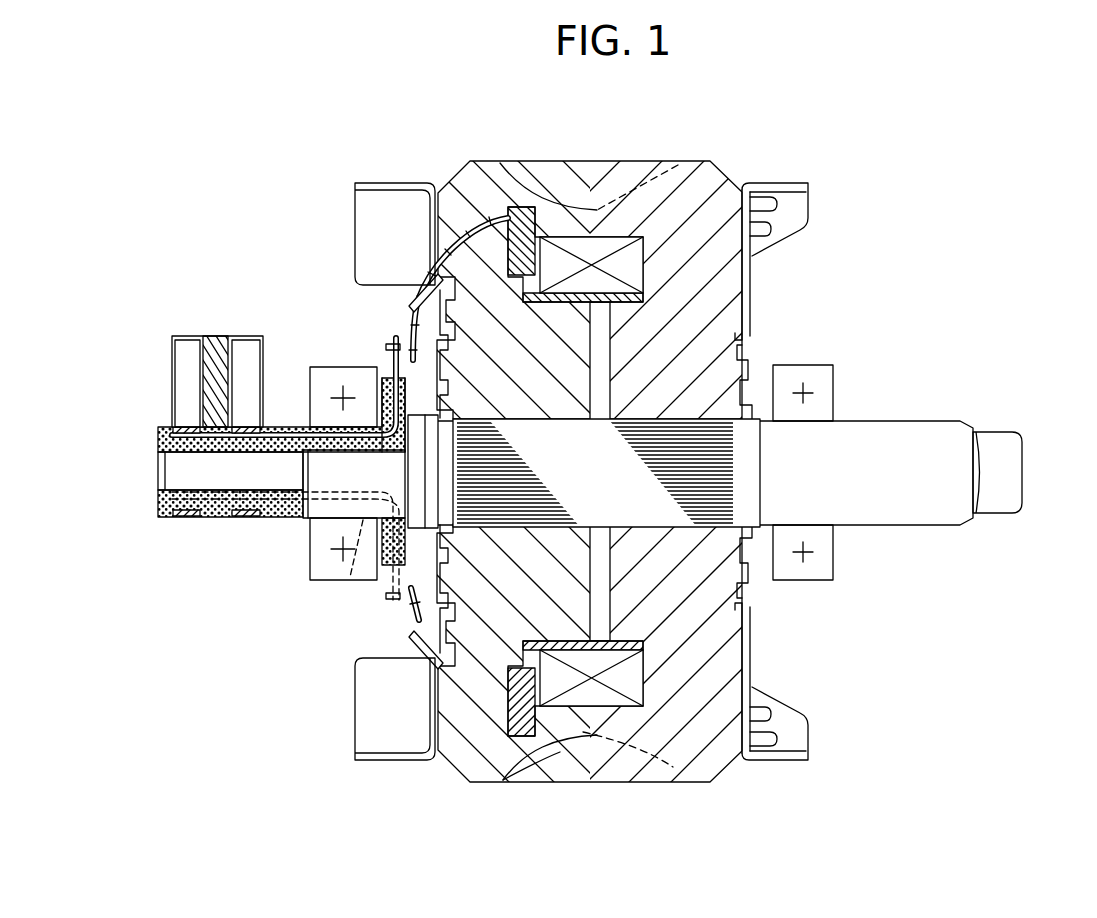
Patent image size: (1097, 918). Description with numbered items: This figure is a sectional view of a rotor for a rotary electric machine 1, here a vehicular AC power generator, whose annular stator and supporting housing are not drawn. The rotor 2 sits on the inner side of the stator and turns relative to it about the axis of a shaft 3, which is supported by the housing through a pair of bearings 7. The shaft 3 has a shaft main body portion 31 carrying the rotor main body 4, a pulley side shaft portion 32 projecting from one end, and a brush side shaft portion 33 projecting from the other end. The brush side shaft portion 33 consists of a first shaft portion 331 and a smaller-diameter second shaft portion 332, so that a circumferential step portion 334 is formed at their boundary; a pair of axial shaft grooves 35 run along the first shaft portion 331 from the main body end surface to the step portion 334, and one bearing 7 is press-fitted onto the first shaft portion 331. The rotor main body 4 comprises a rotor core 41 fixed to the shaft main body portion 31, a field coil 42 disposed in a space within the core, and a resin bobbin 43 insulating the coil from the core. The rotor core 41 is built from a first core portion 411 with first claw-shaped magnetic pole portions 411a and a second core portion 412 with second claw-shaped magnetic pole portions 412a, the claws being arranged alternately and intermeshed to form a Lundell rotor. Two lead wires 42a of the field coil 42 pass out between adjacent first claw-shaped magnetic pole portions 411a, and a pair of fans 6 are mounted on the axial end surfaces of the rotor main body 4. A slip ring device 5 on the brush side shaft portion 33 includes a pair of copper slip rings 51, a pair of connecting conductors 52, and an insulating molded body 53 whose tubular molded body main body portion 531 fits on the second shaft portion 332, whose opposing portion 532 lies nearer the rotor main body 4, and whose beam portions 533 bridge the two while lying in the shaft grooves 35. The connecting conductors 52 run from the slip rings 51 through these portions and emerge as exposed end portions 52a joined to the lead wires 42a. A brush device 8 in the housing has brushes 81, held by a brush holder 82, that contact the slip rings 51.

The rotary electric machine 1 is at (222, 215).
The rotor 2 is at (720, 145).
The shaft 3 is at (962, 422).
The shaft main body portion 31 is at (680, 545).
The pulley side shaft portion 32 is at (1025, 470).
The brush side shaft portion 33 is at (160, 470).
The first shaft portion 331 is at (320, 518).
The second shaft portion 332 is at (212, 470).
The step portion 334 is at (303, 500).
The shaft grooves 35 is at (327, 445).
The rotor main body 4 is at (585, 161).
The rotor core 41 is at (630, 170).
The first core portion 411 is at (465, 782).
The first claw-shaped magnetic pole portions 411a is at (673, 767).
The second core portion 412 is at (712, 783).
The second claw-shaped magnetic pole portions 412a is at (525, 785).
The field coil 42 is at (590, 242).
The lead wires 42a is at (410, 305).
The resin bobbin 43 is at (520, 218).
The slip ring device 5 is at (165, 520).
The slip rings 51 is at (215, 428).
The connecting conductors 52 is at (415, 415).
The exposed end portions 52a is at (395, 343).
The molded body 53 is at (165, 440).
The molded body main body portion 531 is at (180, 430).
The opposing portion 532 is at (425, 370).
The beam portions 533 is at (355, 428).
The fans 6 is at (380, 183).
The bearings 7 is at (805, 583).
The brush device 8 is at (172, 345).
The brushes 81 is at (183, 350).
The brush holder 82 is at (217, 338).